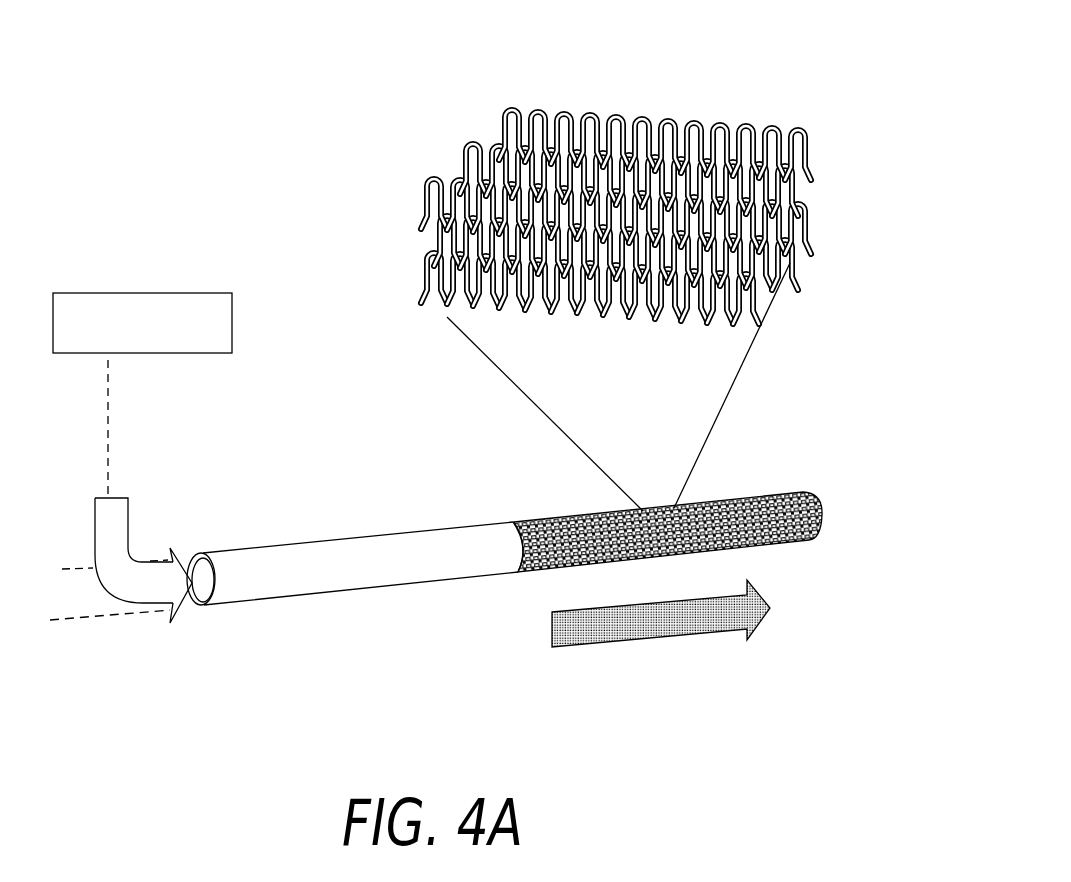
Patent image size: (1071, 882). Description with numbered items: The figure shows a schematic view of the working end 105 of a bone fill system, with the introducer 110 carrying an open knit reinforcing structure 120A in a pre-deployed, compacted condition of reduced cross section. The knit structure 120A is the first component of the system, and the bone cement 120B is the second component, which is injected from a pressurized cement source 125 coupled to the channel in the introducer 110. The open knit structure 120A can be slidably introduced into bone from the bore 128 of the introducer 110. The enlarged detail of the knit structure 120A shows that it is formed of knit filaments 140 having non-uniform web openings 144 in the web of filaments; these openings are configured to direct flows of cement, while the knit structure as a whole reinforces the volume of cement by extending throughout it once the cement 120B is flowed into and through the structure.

The working end 105 is at (573, 272).
The knit filaments 140 is at (470, 145).
The non-uniform web openings 144 is at (420, 227).
The introducer 110 is at (337, 544).
The open knit reinforcing structure 120A is at (727, 500).
The bone cement 120B is at (174, 596).
The pressurized cement source 125 is at (152, 334).
The bore 128 is at (189, 606).